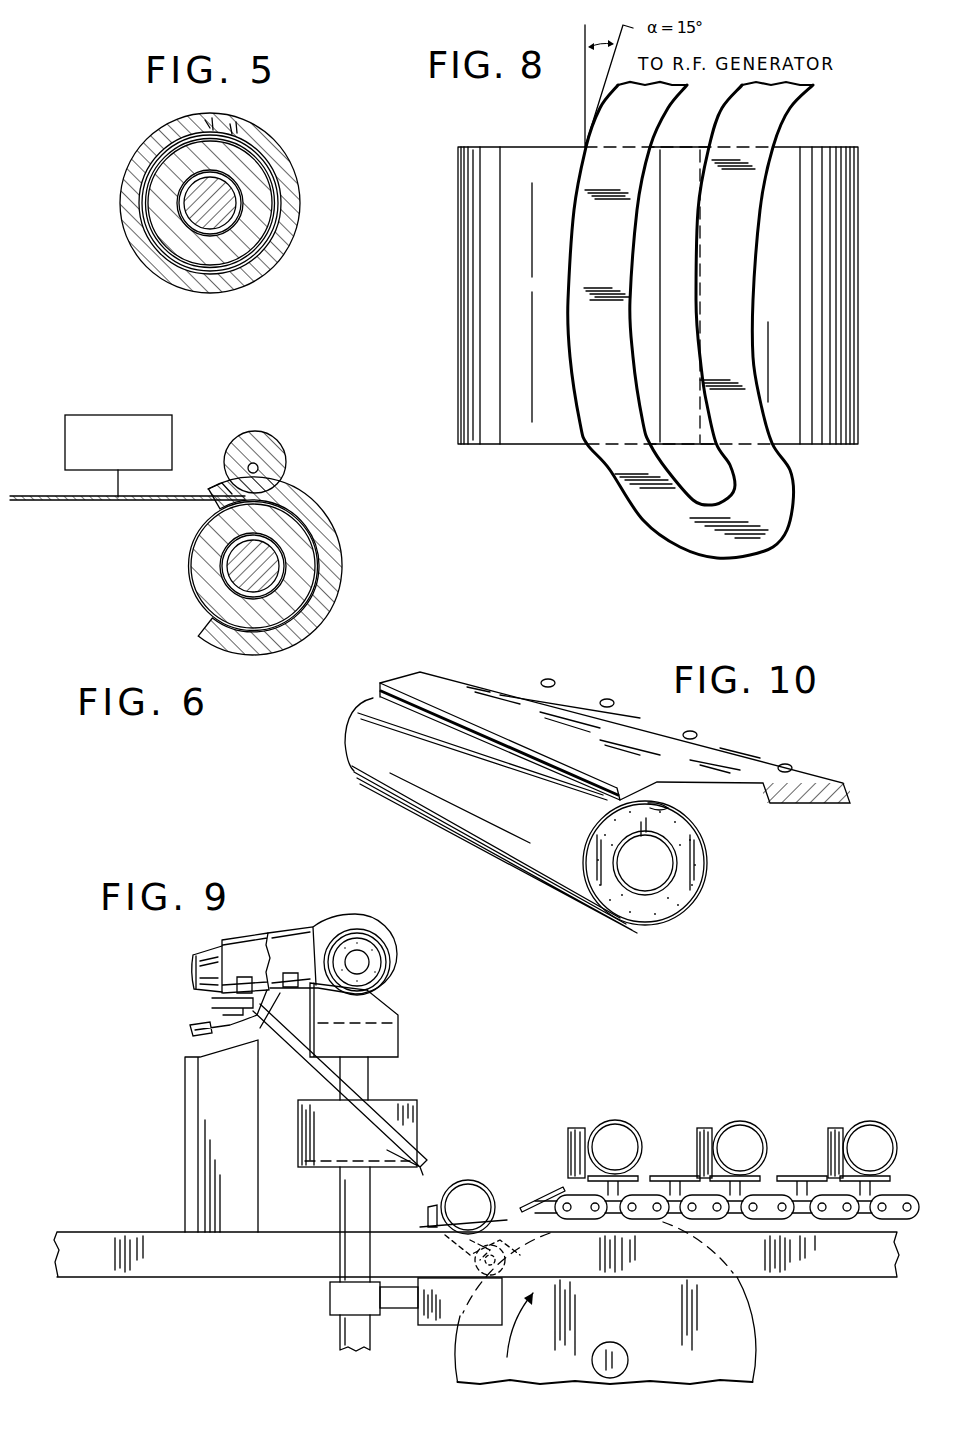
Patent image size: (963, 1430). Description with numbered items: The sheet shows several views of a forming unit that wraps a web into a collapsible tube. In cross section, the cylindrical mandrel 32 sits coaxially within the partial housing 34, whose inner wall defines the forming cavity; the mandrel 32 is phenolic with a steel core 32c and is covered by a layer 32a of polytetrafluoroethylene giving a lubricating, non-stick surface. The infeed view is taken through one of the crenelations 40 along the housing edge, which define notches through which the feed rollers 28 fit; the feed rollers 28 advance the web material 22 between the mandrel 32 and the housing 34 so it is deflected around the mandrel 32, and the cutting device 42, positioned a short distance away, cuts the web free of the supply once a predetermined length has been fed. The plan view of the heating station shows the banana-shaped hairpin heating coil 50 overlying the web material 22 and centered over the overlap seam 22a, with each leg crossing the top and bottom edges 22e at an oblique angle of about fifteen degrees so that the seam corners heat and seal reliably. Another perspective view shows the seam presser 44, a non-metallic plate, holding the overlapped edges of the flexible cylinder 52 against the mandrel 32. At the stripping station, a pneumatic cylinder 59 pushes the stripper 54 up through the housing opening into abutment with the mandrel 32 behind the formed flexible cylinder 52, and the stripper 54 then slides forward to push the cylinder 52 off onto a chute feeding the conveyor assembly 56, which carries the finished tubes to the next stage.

In FIG. 6, the web material 22 is at (83, 503).
In FIG. 8, the web material 22 is at (478, 318).
In FIG. 8, the seam 22a is at (677, 163).
In FIG. 10, the seam 22a is at (670, 807).
In FIG. 8, the cylinder top and bottom edges 22e is at (523, 144).
In FIG. 6, the feed rollers 28 is at (277, 463).
In FIG. 5, the mandrel 32 is at (160, 187).
In FIG. 6, the mandrel 32 is at (227, 607).
In FIG. 10, the mandrel 32 is at (685, 888).
In FIG. 9, the mandrel 32 is at (205, 950).
In FIG. 5, the layer 32a is at (200, 267).
In FIG. 5, the steel core 32c is at (187, 203).
In FIG. 6, the steel core 32c is at (237, 573).
In FIG. 9, the steel core 32c is at (362, 960).
In FIG. 5, the housing 34 is at (233, 281).
In FIG. 6, the housing 34 is at (333, 573).
In FIG. 9, the housing 34 is at (257, 935).
In FIG. 5, the crenelations 40 is at (207, 120).
In FIG. 9, the crenelations 40 is at (283, 990).
In FIG. 6, the cutting device 42 is at (63, 430).
In FIG. 10, the seam presser 44 is at (738, 758).
In FIG. 8, the heating coil 50 is at (602, 488).
In FIG. 10, the flexible cylinder 52 is at (575, 860).
In FIG. 9, the flexible cylinder 52 is at (392, 960).
In FIG. 9, the stripper 54 is at (400, 1010).
In FIG. 9, the conveyor assembly 56 is at (785, 1168).
In FIG. 9, the pneumatic cylinder 59 is at (363, 1078).